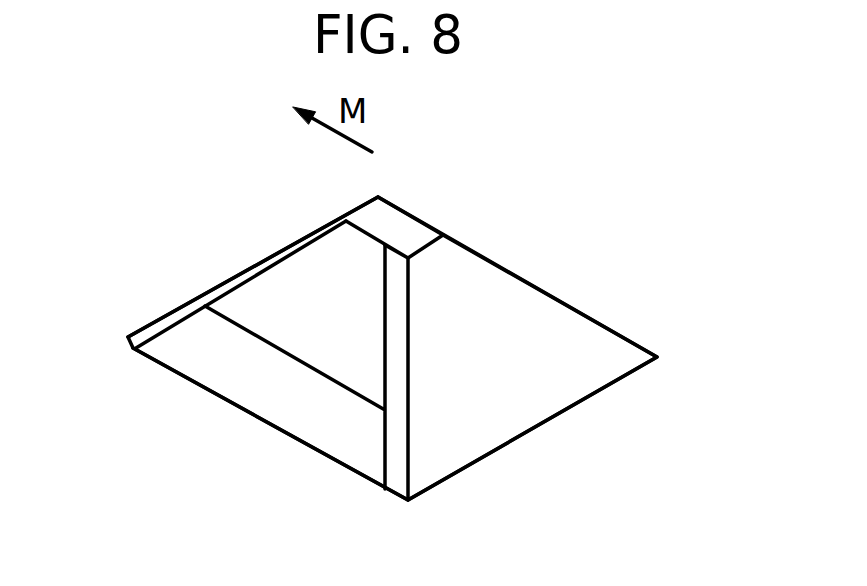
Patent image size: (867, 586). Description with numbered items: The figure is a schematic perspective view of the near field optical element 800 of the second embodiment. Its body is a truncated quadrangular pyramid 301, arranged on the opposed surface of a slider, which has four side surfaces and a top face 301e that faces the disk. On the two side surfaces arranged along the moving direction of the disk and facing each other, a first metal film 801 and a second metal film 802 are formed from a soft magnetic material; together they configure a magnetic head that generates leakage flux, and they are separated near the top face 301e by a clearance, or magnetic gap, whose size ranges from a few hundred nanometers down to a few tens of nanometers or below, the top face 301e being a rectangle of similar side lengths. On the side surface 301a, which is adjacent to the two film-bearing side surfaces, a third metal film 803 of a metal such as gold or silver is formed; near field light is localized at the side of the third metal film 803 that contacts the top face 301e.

The near field optical element 800 is at (607, 135).
The first metal film 801 is at (307, 240).
The second metal film 802 is at (498, 335).
The third metal film 803 is at (315, 322).
The truncated quadrangular pyramid 301 is at (345, 415).
The side surface 301a is at (197, 353).
The top face 301e is at (393, 222).